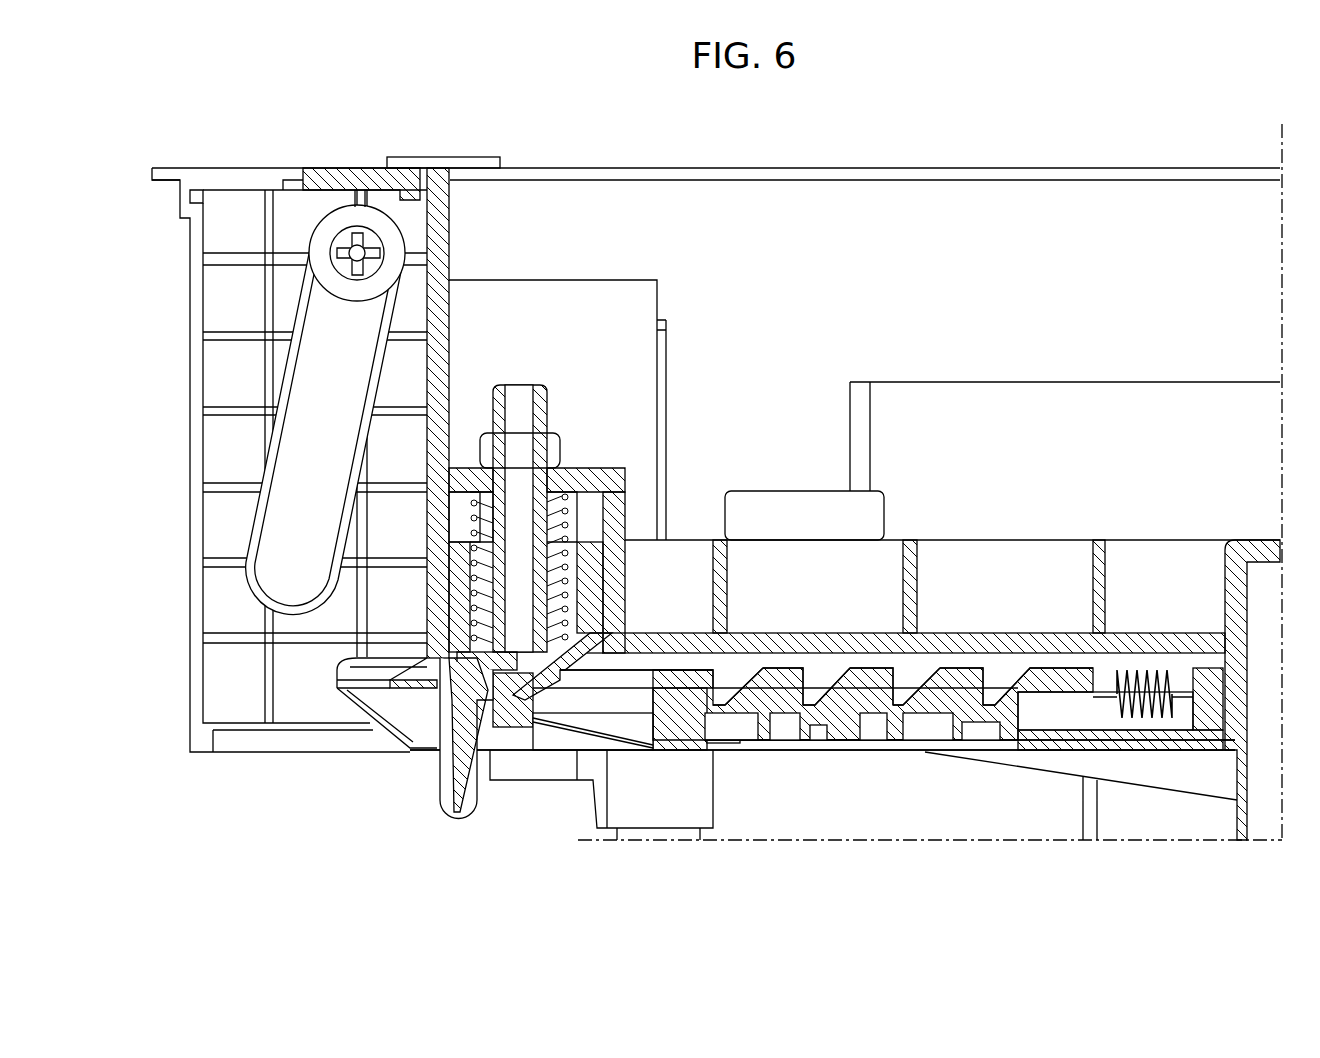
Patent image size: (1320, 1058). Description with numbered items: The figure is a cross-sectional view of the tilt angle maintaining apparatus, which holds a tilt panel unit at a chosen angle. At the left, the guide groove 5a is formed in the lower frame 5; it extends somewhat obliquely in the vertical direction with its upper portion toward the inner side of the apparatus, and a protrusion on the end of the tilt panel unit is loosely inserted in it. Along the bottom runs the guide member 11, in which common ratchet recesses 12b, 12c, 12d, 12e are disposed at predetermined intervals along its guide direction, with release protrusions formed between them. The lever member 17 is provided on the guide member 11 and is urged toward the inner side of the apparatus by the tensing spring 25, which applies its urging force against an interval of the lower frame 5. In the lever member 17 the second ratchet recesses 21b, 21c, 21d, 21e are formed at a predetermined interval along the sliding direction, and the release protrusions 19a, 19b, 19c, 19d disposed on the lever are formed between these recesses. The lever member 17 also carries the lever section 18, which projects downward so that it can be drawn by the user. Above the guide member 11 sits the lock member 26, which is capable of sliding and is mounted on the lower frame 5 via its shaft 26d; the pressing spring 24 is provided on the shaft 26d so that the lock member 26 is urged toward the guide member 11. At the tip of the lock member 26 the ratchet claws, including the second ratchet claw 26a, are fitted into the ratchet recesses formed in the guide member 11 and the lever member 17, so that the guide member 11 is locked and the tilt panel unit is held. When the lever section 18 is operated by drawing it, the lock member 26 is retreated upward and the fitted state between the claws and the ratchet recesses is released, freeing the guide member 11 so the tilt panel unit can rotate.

The lower frame 5 is at (805, 167).
The guide groove 5a is at (300, 408).
The guide member 11 is at (812, 725).
The common ratchet recess 12b is at (733, 700).
The common ratchet recess 12c is at (832, 695).
The common ratchet recess 12d is at (902, 697).
The common ratchet recess 12e is at (993, 712).
The lever member 17 is at (397, 685).
The lever section 18 is at (443, 807).
The release protrusion 19a is at (668, 676).
The release protrusion 19b is at (777, 668).
The release protrusion 19c is at (867, 670).
The release protrusion 19d is at (967, 667).
The second ratchet recess 21b is at (732, 666).
The second ratchet recess 21c is at (820, 666).
The second ratchet recess 21d is at (917, 664).
The second ratchet recess 21e is at (1003, 662).
The pressing spring 24 is at (572, 530).
The tensing spring 25 is at (1150, 722).
The lock member 26 is at (568, 508).
The second ratchet claw 26a is at (530, 690).
The shaft 26d is at (545, 395).